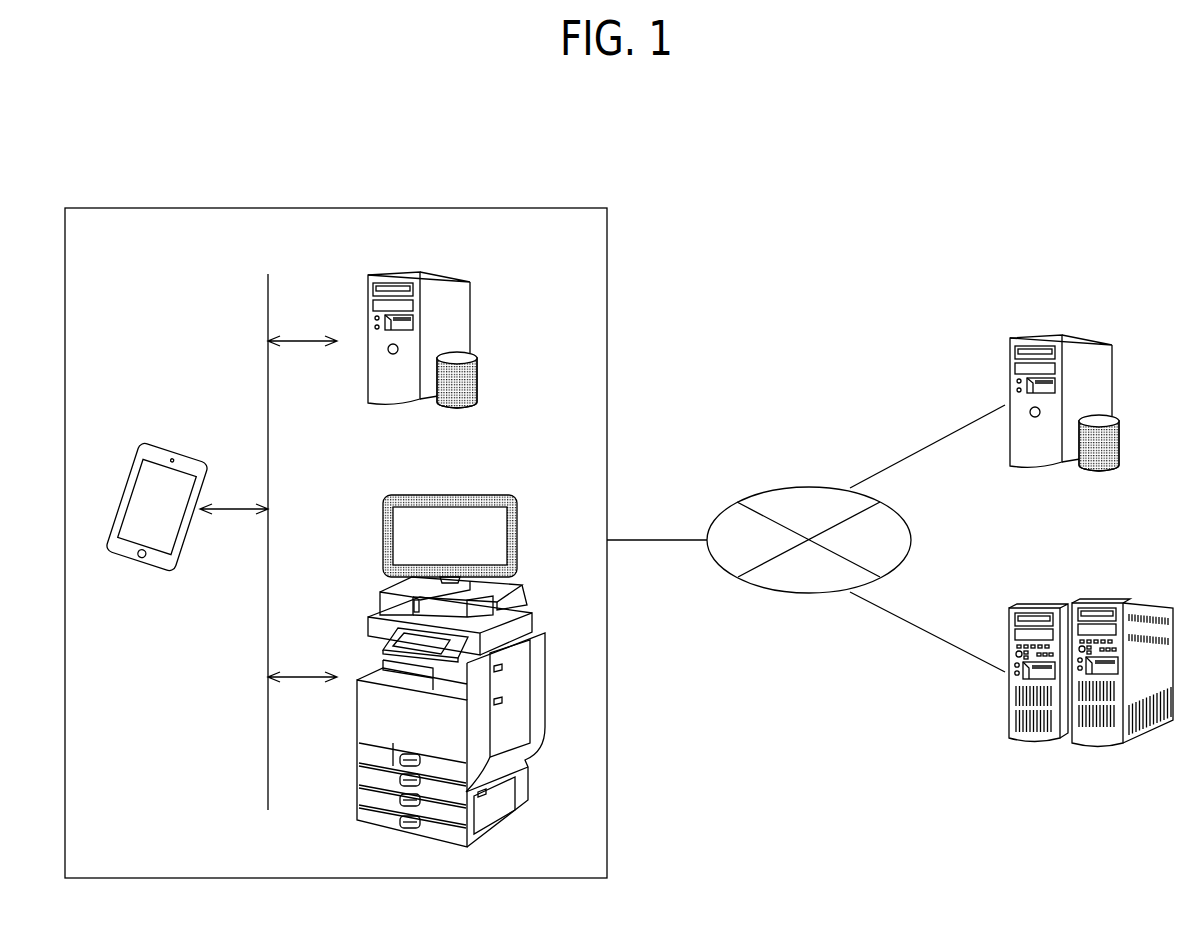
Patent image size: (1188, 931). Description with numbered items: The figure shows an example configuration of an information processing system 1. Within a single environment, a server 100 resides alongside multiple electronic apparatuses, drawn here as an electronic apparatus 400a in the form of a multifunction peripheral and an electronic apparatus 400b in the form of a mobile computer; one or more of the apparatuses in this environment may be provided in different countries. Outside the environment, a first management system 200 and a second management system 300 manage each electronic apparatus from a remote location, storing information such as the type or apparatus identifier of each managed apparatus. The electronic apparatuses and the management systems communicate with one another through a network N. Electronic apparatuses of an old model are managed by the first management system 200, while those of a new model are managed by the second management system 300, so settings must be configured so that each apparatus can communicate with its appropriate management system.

The information processing system 1 is at (778, 165).
The server 100 is at (458, 275).
The first management system 200 is at (1100, 340).
The second management system 300 is at (1095, 602).
The electronic apparatus 400a is at (485, 495).
The electronic apparatus 400b is at (181, 453).
The network N is at (825, 487).